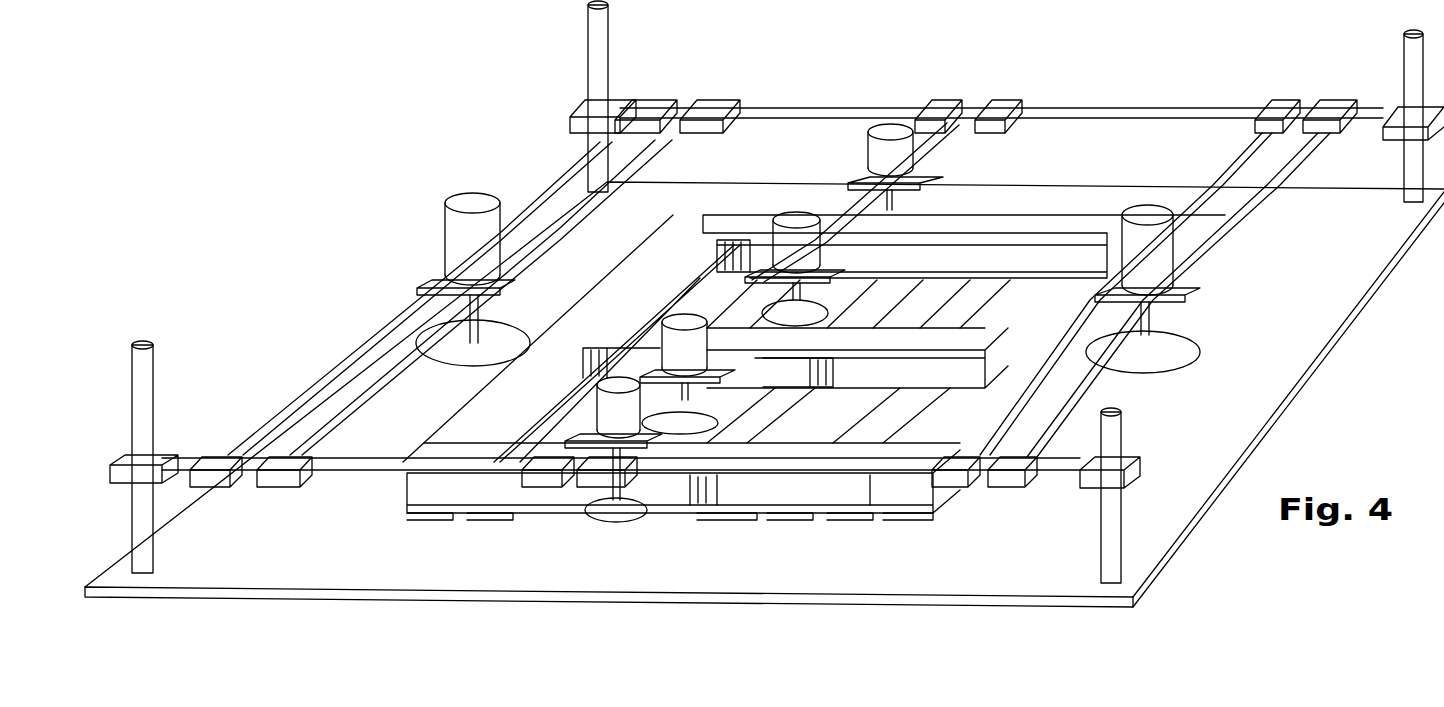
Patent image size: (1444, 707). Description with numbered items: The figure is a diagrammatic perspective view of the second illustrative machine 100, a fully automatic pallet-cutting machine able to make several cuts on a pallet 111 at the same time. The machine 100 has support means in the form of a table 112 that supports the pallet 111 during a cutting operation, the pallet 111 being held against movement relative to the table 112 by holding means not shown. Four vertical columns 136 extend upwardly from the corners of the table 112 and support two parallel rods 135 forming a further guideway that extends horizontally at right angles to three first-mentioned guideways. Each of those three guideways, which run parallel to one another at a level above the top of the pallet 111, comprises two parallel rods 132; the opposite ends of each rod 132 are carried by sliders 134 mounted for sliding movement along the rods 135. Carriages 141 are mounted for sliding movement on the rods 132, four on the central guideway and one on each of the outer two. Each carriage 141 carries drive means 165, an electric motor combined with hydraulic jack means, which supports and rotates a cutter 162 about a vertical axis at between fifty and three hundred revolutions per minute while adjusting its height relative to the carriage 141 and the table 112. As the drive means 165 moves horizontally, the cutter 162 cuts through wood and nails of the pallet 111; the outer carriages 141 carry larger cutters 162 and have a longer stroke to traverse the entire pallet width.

The second illustrative machine 100 is at (1106, 82).
The pallet 111 is at (1050, 222).
The table 112 is at (1143, 550).
The rods 132 is at (345, 420).
The sliders 134 is at (720, 100).
The rods 135 is at (1208, 90).
The vertical columns 136 is at (142, 370).
The carriages 141 is at (445, 283).
The cutter 162 is at (535, 325).
The drive means 165 is at (460, 228).